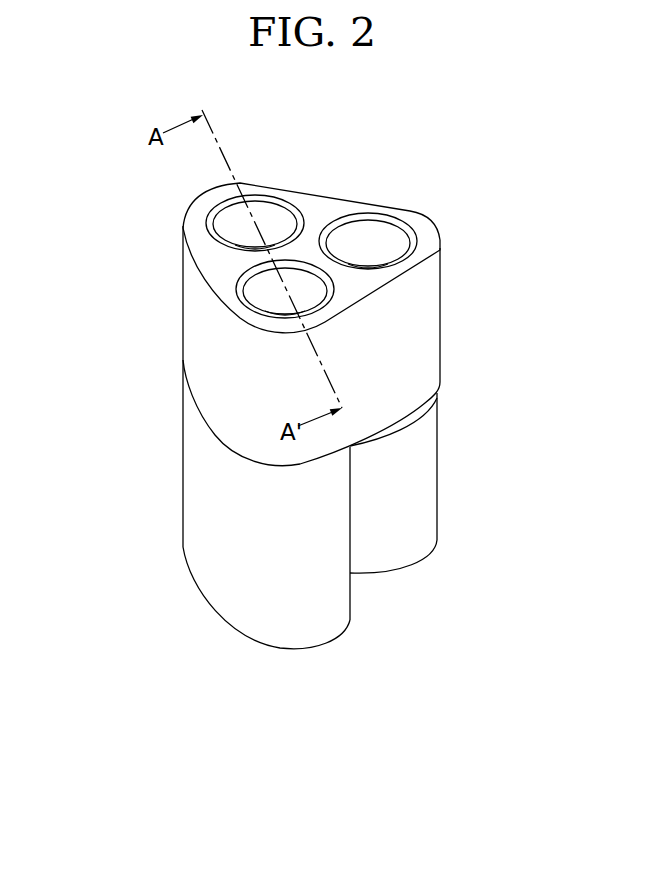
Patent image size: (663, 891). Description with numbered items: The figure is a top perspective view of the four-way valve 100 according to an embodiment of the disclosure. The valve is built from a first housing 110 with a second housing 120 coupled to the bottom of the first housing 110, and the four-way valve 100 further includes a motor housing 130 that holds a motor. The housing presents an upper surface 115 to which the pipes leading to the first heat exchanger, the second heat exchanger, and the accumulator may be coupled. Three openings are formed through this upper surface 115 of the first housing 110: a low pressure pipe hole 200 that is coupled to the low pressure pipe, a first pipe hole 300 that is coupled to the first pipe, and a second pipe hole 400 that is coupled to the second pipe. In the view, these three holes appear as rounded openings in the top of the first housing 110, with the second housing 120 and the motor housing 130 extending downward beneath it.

The four-way valve 100 is at (132, 184).
The first housing 110 is at (433, 237).
The upper surface 115 is at (322, 203).
The second housing 120 is at (270, 613).
The motor housing 130 is at (420, 492).
The low pressure pipe hole 200 is at (381, 238).
The first pipe hole 300 is at (262, 301).
The second pipe hole 400 is at (277, 224).